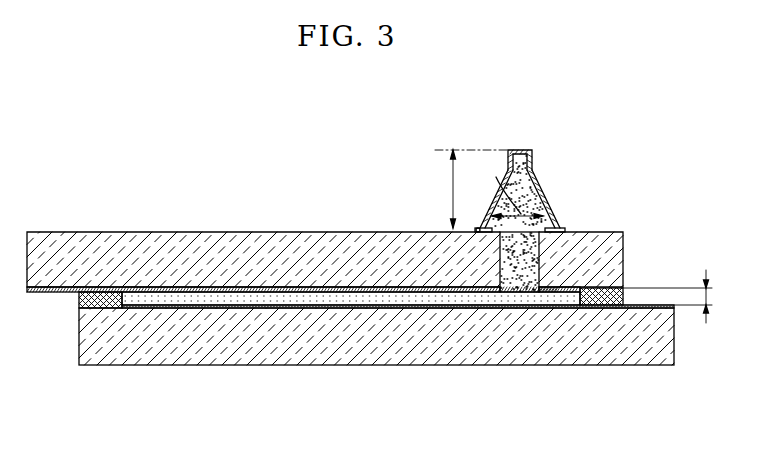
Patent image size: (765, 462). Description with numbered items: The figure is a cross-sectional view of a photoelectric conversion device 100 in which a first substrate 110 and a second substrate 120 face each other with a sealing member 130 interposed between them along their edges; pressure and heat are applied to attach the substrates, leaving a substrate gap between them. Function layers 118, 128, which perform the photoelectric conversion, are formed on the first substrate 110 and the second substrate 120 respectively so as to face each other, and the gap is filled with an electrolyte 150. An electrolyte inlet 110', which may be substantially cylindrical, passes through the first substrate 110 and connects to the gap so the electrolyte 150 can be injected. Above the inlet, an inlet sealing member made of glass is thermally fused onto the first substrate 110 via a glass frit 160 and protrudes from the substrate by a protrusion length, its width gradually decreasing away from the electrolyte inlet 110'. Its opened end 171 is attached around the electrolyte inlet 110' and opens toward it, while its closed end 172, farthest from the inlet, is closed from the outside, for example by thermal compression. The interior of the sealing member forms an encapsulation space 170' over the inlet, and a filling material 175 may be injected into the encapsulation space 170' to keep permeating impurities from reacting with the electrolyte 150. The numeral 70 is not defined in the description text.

The photoelectric conversion device 100 is at (131, 141).
The first substrate 110 is at (356, 228).
The electrolyte inlet 110' is at (598, 220).
The function layer 118 is at (252, 288).
The second substrate 120 is at (345, 350).
The function layer 128 is at (253, 308).
The sealing member 130 is at (599, 298).
The electrolyte 150 is at (416, 298).
The glass frit 160 is at (480, 228).
The opened end 171 is at (478, 228).
The closed end 172 is at (521, 150).
The filling material 175 is at (526, 162).
The encapsulation space 170' is at (542, 199).
The dispenser nozzle 70 is at (562, 131).